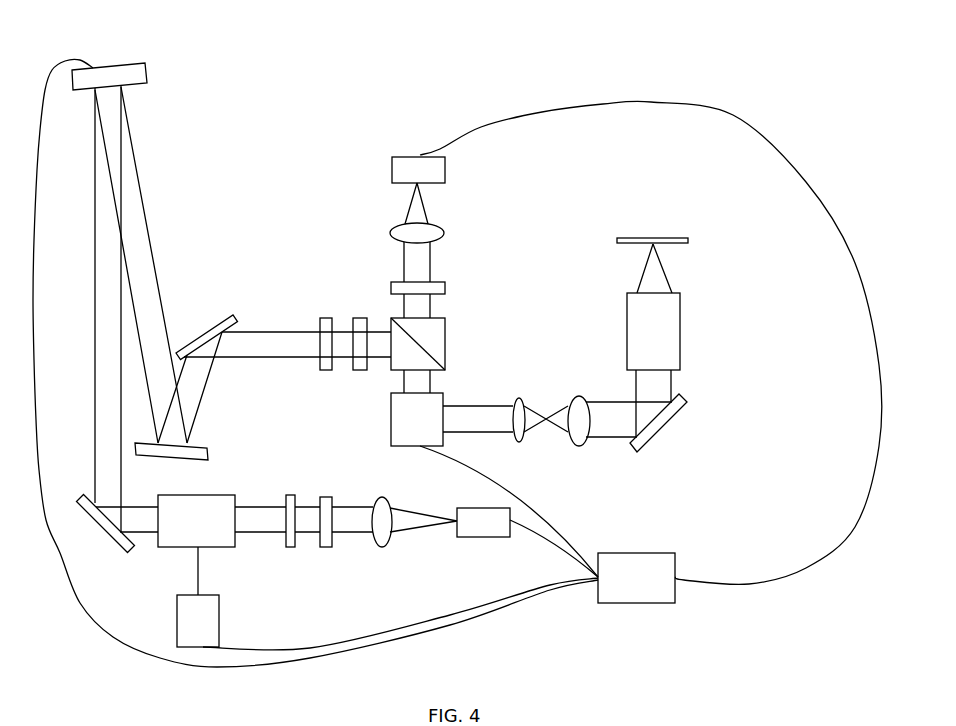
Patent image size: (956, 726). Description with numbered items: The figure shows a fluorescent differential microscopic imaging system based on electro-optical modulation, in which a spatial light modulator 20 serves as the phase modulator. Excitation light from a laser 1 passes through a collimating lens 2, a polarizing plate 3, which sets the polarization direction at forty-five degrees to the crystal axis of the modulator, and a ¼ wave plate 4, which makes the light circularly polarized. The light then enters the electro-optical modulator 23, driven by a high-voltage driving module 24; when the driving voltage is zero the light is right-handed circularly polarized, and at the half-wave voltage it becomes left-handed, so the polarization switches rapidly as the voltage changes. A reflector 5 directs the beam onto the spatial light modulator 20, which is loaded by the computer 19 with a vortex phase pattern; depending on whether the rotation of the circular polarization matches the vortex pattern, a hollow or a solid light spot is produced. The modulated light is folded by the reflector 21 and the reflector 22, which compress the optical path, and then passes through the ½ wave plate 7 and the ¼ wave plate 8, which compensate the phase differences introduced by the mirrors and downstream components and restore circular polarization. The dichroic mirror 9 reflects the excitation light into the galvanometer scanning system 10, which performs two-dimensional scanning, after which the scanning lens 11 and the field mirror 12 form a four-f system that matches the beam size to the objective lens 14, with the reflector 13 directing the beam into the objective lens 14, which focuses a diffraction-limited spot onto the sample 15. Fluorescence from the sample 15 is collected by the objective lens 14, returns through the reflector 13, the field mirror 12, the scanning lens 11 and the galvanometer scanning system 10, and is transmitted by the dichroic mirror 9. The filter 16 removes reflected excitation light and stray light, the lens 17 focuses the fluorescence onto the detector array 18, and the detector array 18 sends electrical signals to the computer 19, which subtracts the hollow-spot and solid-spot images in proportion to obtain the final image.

The 638 nm laser 1 is at (483, 512).
The collimating lens 2 is at (382, 510).
The polarizing plate 3 is at (326, 510).
The ¼ wave plate 4 is at (291, 509).
The reflector 5 is at (106, 524).
The ½ wave plate 7 is at (324, 331).
The ¼ wave plate 8 is at (360, 331).
The dichroic mirror 9 is at (428, 344).
The galvanometer scanning system 10 is at (405, 419).
The scanning lens 11 is at (518, 409).
The field mirror 12 is at (580, 411).
The reflector 13 is at (658, 424).
The large numerical aperture objective lens 14 is at (669, 331).
The sample 15 is at (667, 241).
The filter 16 is at (432, 291).
The lens 17 is at (432, 234).
The detector array 18 is at (433, 170).
The computer 19 is at (636, 566).
The spatial light modulator 20 is at (109, 62).
The reflector 21 is at (186, 453).
The reflector 22 is at (207, 337).
The electro-optical modulator 23 is at (196, 509).
The high-voltage driving module 24 is at (213, 621).